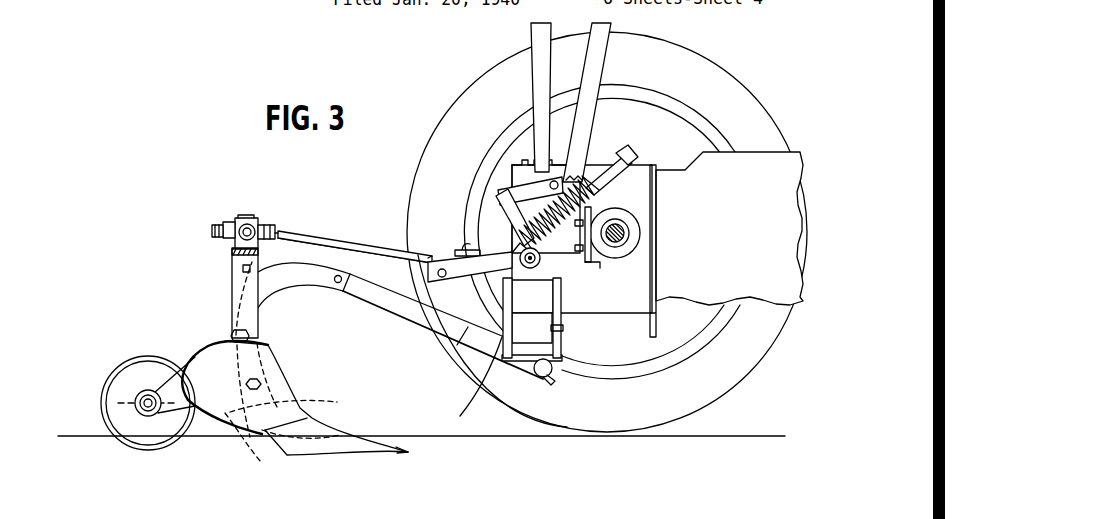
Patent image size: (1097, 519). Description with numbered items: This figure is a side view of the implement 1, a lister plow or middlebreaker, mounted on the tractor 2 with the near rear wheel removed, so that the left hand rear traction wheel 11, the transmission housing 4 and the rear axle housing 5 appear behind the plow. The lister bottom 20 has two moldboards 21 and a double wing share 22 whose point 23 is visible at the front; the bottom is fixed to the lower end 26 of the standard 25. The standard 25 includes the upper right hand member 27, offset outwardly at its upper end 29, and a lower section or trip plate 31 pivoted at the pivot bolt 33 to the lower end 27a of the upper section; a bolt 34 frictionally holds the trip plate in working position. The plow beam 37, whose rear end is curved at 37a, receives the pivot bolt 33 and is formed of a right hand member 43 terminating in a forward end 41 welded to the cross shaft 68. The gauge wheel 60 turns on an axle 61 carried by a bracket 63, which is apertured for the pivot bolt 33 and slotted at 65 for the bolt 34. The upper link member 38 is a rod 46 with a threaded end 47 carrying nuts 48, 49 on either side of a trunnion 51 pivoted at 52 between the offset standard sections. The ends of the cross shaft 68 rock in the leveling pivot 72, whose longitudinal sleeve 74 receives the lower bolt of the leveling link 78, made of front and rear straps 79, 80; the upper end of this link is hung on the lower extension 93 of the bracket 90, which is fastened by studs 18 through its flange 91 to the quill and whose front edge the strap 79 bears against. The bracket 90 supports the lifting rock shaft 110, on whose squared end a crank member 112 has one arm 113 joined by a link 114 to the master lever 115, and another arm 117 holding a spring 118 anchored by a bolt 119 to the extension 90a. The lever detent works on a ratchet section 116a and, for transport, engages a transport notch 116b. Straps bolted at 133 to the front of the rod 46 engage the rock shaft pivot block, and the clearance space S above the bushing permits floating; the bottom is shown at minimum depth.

The implement 1 is at (317, 226).
The tractor 2 is at (742, 144).
The transmission housing 4 is at (757, 170).
The rear axle housing 5 is at (655, 212).
The left hand rear traction wheel 11 is at (679, 52).
The attaching studs 18 is at (580, 228).
The lister bottom 20 is at (303, 392).
The moldboards 21 is at (247, 421).
The double wing share 22 is at (348, 447).
The point of the share 23 is at (390, 443).
The standard 25 is at (231, 287).
The lower end of the standard 26 is at (319, 405).
The right hand standard member 27 is at (240, 271).
The lower ends of the upper standard sections 27a is at (203, 424).
The upper offset standard section 29 is at (236, 246).
The right hand lower standard section 31 is at (274, 453).
The pivot bolt 33 is at (271, 391).
The bolt 34 is at (231, 333).
The plow beam 37 is at (397, 317).
The curved section of the plow beam 37a is at (280, 286).
The upper link member 38 is at (385, 249).
The forward end section of the beam member 41 is at (514, 362).
The right hand beam member 43 is at (428, 325).
The rod 46 is at (341, 243).
The threaded end of the rod 47 is at (213, 223).
The nut 48 is at (227, 220).
The nut 49 is at (274, 226).
The trunnion member 51 is at (247, 215).
The pivot 52 is at (255, 225).
The gauge wheel 60 is at (107, 385).
The axle 61 is at (135, 406).
The bracket 63 is at (168, 387).
The slots 65 is at (266, 341).
The cross shaft 68 is at (548, 385).
The leveling pivot 72 is at (565, 338).
The sleeve section 74 is at (494, 384).
The leveling link 78 is at (563, 320).
The front strap member 79 is at (564, 328).
The rear strap member 80 is at (474, 366).
The bracket 90 is at (507, 178).
The extension 90a is at (650, 193).
The apertured flange 91 is at (600, 258).
The lower extension 93 is at (555, 226).
The lifting rock shaft 110 is at (502, 293).
The crank member 112 is at (499, 223).
The arm of the crank member 113 is at (502, 210).
The link 114 is at (523, 165).
The master lever 115 is at (594, 60).
The ratchet section 116a is at (535, 170).
The transport notch 116b is at (601, 170).
The arm of the crank member 117 is at (470, 277).
The spring 118 is at (588, 172).
The bolt 119 is at (610, 170).
The bolts 133 is at (465, 250).
The clearance space S is at (427, 265).